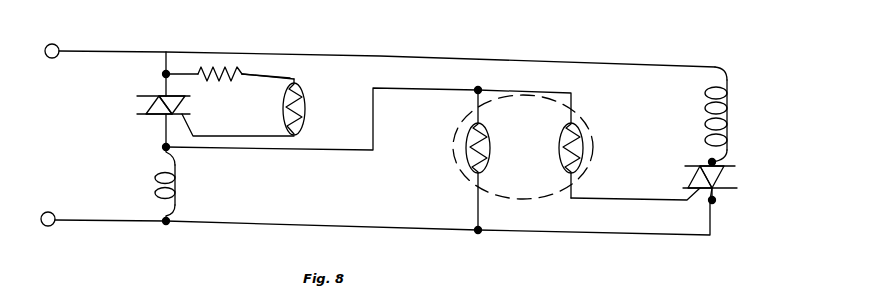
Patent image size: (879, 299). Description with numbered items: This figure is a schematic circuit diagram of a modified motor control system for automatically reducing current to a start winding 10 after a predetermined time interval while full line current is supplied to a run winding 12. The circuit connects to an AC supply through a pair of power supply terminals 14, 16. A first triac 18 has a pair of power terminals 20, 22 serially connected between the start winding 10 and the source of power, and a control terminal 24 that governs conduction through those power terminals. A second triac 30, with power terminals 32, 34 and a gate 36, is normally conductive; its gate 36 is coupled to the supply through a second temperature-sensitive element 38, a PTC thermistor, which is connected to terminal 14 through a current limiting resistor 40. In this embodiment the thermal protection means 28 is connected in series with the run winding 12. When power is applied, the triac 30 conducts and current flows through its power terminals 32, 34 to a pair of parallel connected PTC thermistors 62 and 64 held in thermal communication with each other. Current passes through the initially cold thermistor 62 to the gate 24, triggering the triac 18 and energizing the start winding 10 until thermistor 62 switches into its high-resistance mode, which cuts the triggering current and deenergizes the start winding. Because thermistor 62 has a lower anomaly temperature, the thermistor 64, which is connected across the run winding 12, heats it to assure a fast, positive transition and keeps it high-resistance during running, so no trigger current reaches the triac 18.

The power supply terminal 14 is at (58, 44).
The power supply terminal 16 is at (52, 212).
The start winding 10 is at (728, 112).
The run winding 12 is at (178, 187).
The triac 18 is at (733, 176).
The power terminal 20 is at (715, 163).
The power terminal 22 is at (715, 200).
The control terminal 24 is at (687, 200).
The thermal protection means 28 is at (263, 116).
The triac 30 is at (146, 104).
The power terminal 32 is at (160, 75).
The power terminal 34 is at (160, 147).
The gate 36 is at (200, 134).
The second temperature-sensitive element 38 is at (305, 106).
The current limiting resistor 40 is at (217, 68).
The PTC thermistor 62 is at (560, 168).
The PTC thermistor 64 is at (490, 133).